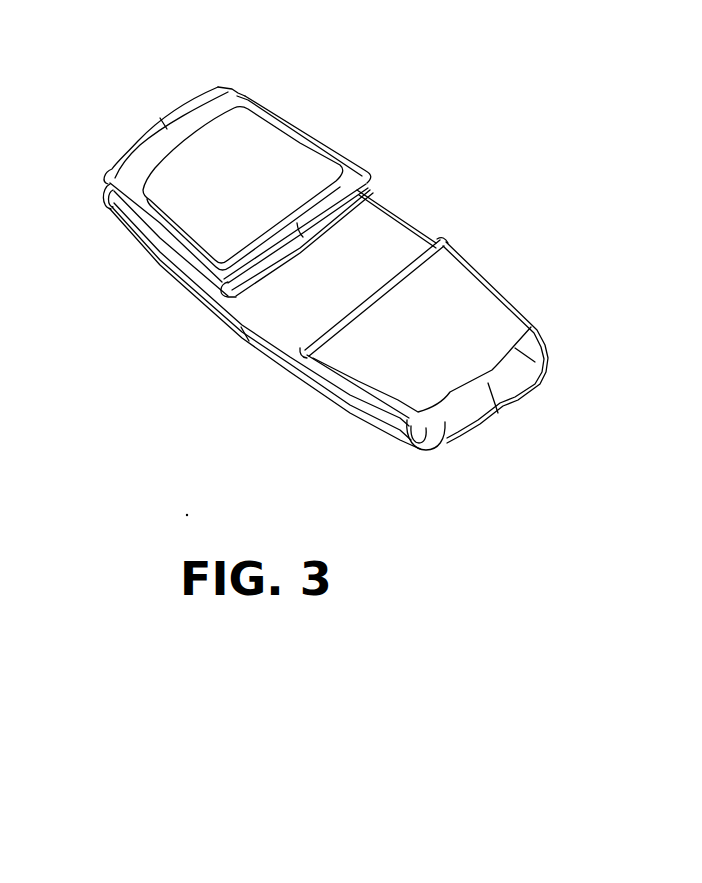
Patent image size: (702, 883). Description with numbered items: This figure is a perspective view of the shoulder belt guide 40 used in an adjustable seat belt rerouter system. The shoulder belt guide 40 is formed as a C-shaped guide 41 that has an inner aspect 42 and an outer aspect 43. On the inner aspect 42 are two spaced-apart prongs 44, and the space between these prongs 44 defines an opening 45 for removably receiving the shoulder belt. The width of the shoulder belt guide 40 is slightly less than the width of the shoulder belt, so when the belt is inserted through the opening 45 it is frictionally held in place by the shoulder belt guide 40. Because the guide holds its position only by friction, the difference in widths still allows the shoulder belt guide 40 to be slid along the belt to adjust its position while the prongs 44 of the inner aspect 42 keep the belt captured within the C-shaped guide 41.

The shoulder belt guide 40 is at (323, 266).
The C-shaped guide 41 is at (163, 264).
The inner aspect 42 is at (371, 251).
The outer aspect 43 is at (242, 337).
The prongs 44 is at (267, 150).
The opening 45 is at (392, 199).